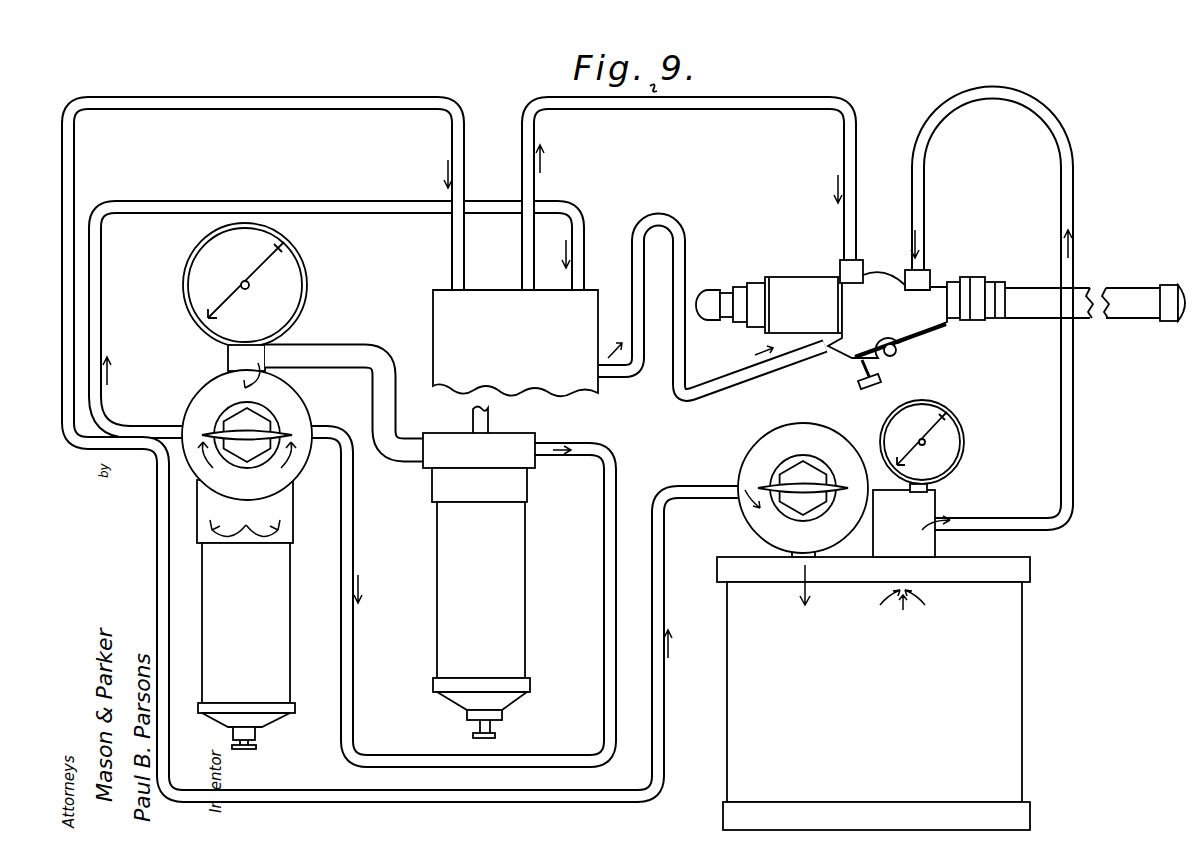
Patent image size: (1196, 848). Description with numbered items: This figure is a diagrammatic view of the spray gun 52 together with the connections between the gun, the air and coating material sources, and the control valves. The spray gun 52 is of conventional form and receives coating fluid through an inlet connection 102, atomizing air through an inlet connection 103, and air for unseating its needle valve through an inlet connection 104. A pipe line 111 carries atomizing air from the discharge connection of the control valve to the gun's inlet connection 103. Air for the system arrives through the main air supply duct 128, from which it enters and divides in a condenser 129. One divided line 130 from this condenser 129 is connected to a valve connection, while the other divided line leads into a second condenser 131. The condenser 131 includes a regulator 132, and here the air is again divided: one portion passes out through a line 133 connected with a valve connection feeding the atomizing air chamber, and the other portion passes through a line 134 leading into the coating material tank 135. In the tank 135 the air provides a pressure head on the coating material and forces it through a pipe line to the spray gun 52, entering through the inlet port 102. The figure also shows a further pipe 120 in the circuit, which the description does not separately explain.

The spray gun 52 is at (1108, 297).
The inlet connection 102 is at (931, 272).
The inlet connection 103 is at (836, 360).
The inlet connection 104 is at (845, 265).
The pipe line 111 is at (745, 385).
The pipe 120 is at (717, 100).
The main air supply duct 128 is at (492, 418).
The condenser 129 is at (479, 585).
The divided line 130 is at (300, 85).
The condenser 131 is at (246, 614).
The regulator 132 is at (217, 385).
The line 133 is at (98, 283).
The line 134 is at (352, 523).
The coating material tank 135 is at (873, 615).